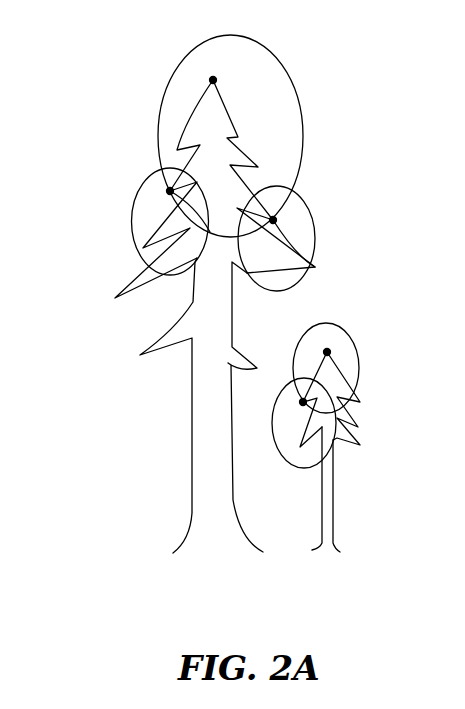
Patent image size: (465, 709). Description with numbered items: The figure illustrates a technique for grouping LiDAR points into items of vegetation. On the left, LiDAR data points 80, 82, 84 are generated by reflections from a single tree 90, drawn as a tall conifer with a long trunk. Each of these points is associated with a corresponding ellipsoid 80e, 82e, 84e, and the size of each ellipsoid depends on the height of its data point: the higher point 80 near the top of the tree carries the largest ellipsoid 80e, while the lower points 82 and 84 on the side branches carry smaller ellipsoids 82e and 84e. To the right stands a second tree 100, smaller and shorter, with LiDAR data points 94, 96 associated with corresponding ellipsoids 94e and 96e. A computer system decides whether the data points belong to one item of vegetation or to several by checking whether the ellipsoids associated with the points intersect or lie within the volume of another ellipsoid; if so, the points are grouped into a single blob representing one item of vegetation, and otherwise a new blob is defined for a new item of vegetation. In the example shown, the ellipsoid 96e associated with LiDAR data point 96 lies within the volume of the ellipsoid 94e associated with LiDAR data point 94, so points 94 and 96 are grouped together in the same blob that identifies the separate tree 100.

The LiDAR data point 80 is at (213, 80).
The ellipsoid 80e is at (292, 75).
The LiDAR data point 82 is at (170, 191).
The ellipsoid 82e is at (130, 238).
The LiDAR data point 84 is at (273, 220).
The ellipsoid 84e is at (315, 235).
The single tree 90 is at (202, 432).
The LiDAR data point 94 is at (327, 352).
The ellipsoid 94e is at (342, 322).
The LiDAR data point 96 is at (303, 402).
The ellipsoid 96e is at (287, 468).
The second tree 100 is at (328, 502).